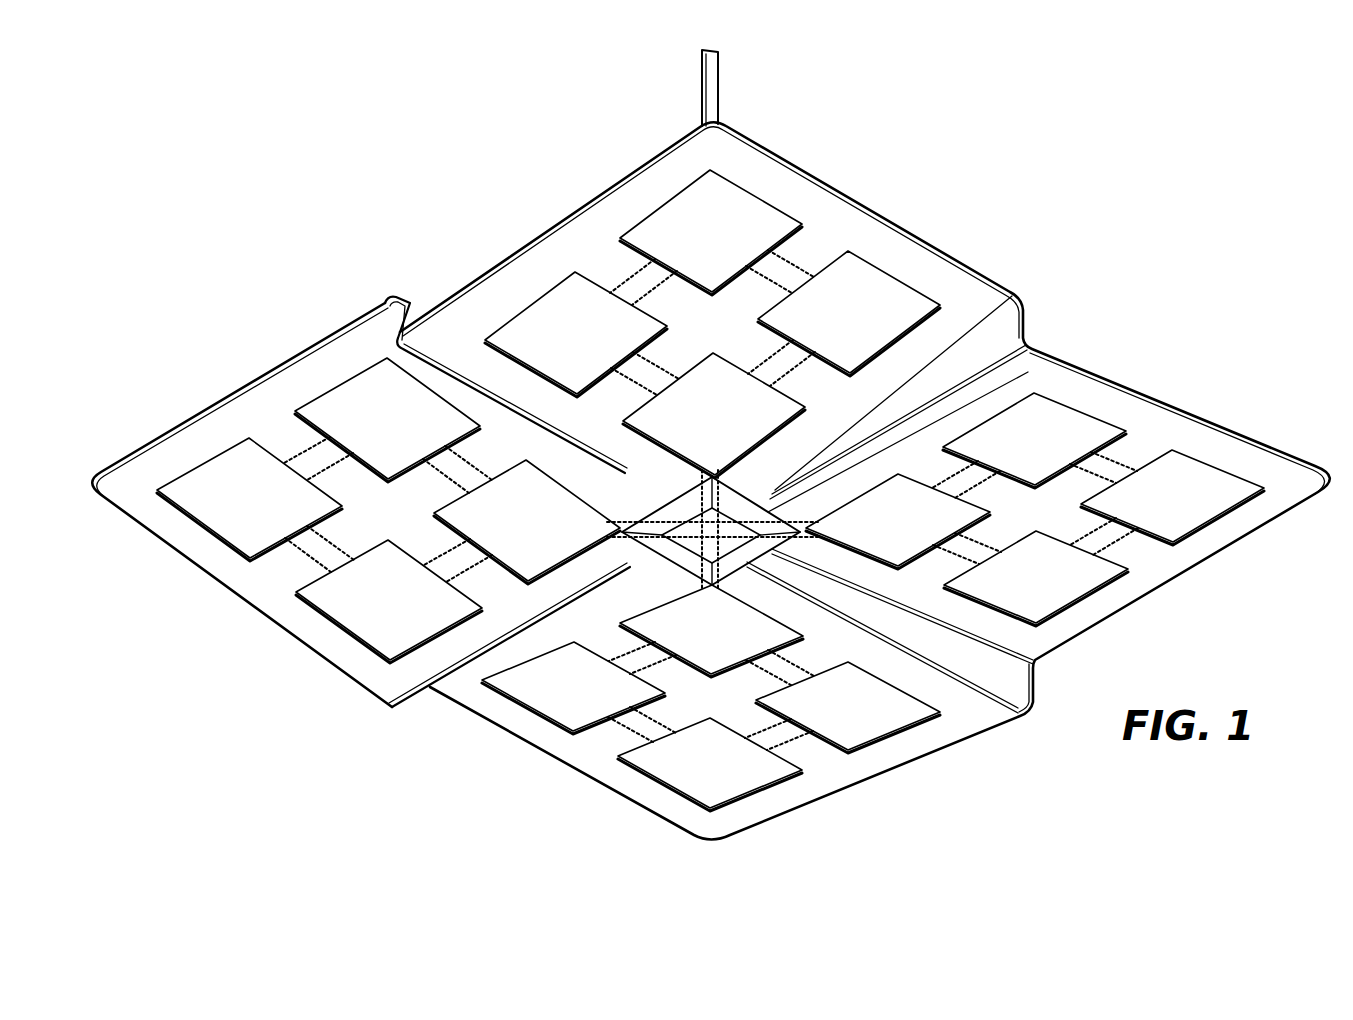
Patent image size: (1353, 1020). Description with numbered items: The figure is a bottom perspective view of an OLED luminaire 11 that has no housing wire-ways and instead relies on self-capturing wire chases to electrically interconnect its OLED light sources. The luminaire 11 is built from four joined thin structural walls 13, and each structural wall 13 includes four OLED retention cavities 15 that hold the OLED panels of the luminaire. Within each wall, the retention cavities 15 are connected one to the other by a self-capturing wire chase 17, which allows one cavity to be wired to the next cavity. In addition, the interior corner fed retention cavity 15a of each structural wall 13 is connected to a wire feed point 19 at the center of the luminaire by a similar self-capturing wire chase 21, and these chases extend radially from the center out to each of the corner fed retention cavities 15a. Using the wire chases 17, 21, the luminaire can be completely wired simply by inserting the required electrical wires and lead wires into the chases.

The OLED luminaire 11 is at (1034, 236).
The structural wall 13 is at (737, 152).
The OLED retention cavity 15 is at (768, 218).
The interior corner fed retention cavity 15a is at (750, 392).
The self-capturing wire chase 17 is at (793, 277).
The wire feed point 19 is at (712, 535).
The self-capturing wire chase 21 is at (758, 530).